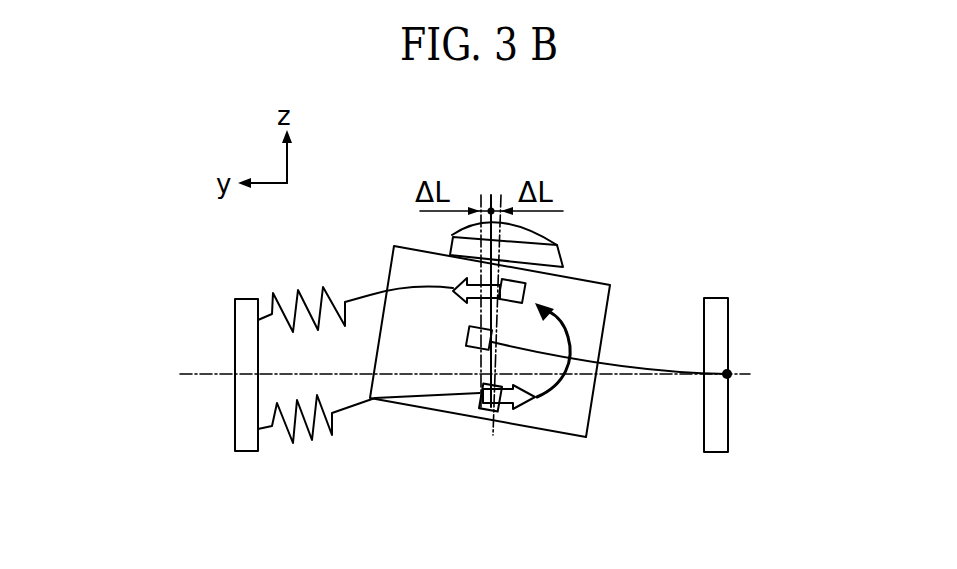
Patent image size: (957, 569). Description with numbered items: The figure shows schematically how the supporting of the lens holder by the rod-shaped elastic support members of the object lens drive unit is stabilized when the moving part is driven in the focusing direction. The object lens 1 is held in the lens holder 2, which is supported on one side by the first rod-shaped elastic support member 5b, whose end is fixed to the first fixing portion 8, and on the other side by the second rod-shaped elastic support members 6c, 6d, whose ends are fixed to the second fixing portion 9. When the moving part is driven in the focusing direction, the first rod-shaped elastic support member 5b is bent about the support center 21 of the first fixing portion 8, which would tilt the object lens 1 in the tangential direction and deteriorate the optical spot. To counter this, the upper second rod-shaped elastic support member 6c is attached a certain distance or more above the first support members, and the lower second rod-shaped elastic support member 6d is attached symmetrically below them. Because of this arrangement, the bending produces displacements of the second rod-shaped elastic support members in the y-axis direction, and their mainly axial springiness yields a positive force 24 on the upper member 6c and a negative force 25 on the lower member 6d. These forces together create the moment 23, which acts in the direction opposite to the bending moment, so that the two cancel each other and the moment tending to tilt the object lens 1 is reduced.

The object lens 1 is at (542, 260).
The lens holder 2 is at (567, 290).
The moment 23 is at (570, 335).
The first rod-shaped elastic support member 5b is at (623, 366).
The first fixing portion 8 is at (720, 318).
The support center 21 is at (729, 372).
The second fixing portion 9 is at (250, 307).
The second rod-shaped elastic support member 6c is at (300, 290).
The second rod-shaped elastic support member 6d is at (313, 436).
The positive force 24 is at (463, 287).
The negative force 25 is at (491, 408).